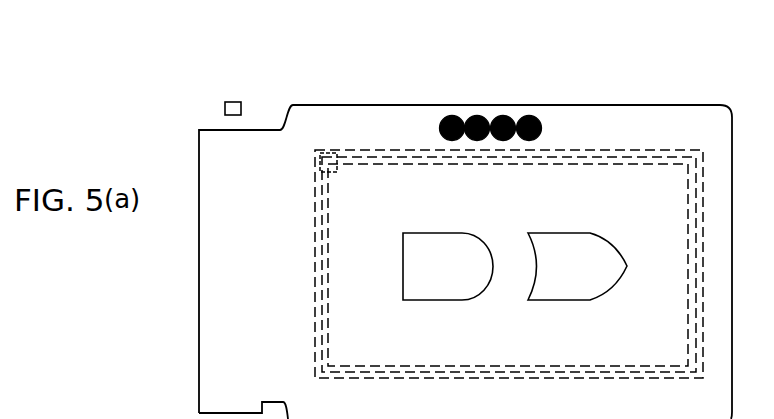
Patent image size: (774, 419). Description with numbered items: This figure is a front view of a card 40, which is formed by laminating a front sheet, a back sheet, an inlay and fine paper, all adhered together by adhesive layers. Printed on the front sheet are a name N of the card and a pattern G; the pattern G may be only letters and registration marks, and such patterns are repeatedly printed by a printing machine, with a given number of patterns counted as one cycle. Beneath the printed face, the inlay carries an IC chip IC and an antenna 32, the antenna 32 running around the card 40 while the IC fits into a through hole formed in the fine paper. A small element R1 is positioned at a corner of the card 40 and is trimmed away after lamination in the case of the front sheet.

The card 40 is at (615, 84).
The region R1 is at (223, 108).
The name of the card N is at (478, 116).
The antenna 32 is at (313, 282).
The IC chip IC is at (318, 160).
The pattern G is at (430, 240).